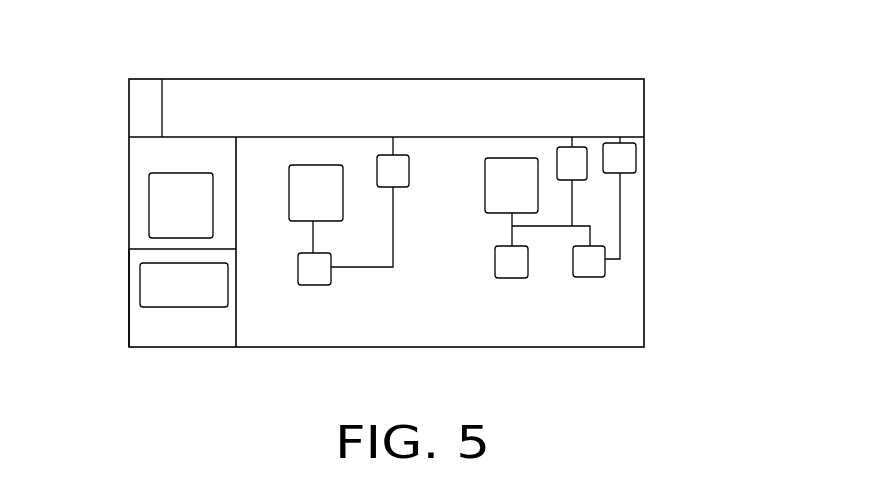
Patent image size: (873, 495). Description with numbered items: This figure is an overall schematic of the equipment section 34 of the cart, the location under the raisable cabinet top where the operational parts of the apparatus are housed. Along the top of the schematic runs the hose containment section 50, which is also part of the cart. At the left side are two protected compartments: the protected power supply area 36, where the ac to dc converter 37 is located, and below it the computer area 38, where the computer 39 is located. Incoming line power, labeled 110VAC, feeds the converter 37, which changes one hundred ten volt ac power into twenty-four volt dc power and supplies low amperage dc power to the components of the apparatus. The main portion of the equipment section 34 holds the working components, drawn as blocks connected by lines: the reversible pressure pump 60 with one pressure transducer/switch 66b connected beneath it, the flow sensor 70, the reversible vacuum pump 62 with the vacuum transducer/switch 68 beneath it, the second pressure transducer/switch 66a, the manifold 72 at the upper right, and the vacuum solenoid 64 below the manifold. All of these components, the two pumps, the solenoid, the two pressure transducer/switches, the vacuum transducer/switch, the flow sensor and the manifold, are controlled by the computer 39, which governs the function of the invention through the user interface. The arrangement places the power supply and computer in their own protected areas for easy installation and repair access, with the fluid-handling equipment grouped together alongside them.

The equipment section 34 is at (578, 322).
The protected power supply area 36 is at (137, 163).
The 110 vac to 24 vdc converter 37 is at (158, 218).
The computer area 38 is at (145, 329).
The computer 39 is at (153, 286).
The hose containment section 50 is at (623, 108).
The reversible pressure pump 60 is at (313, 177).
The reversible vacuum pump 62 is at (515, 177).
The vacuum solenoid 64 is at (590, 267).
The pressure transducer/switch 66a is at (577, 165).
The pressure transducer/switch 66b is at (312, 268).
The vacuum transducer/switch 68 is at (512, 267).
The flow sensor 70 is at (400, 170).
The manifold 72 is at (623, 157).
The 110 vac 110VAC is at (172, 173).